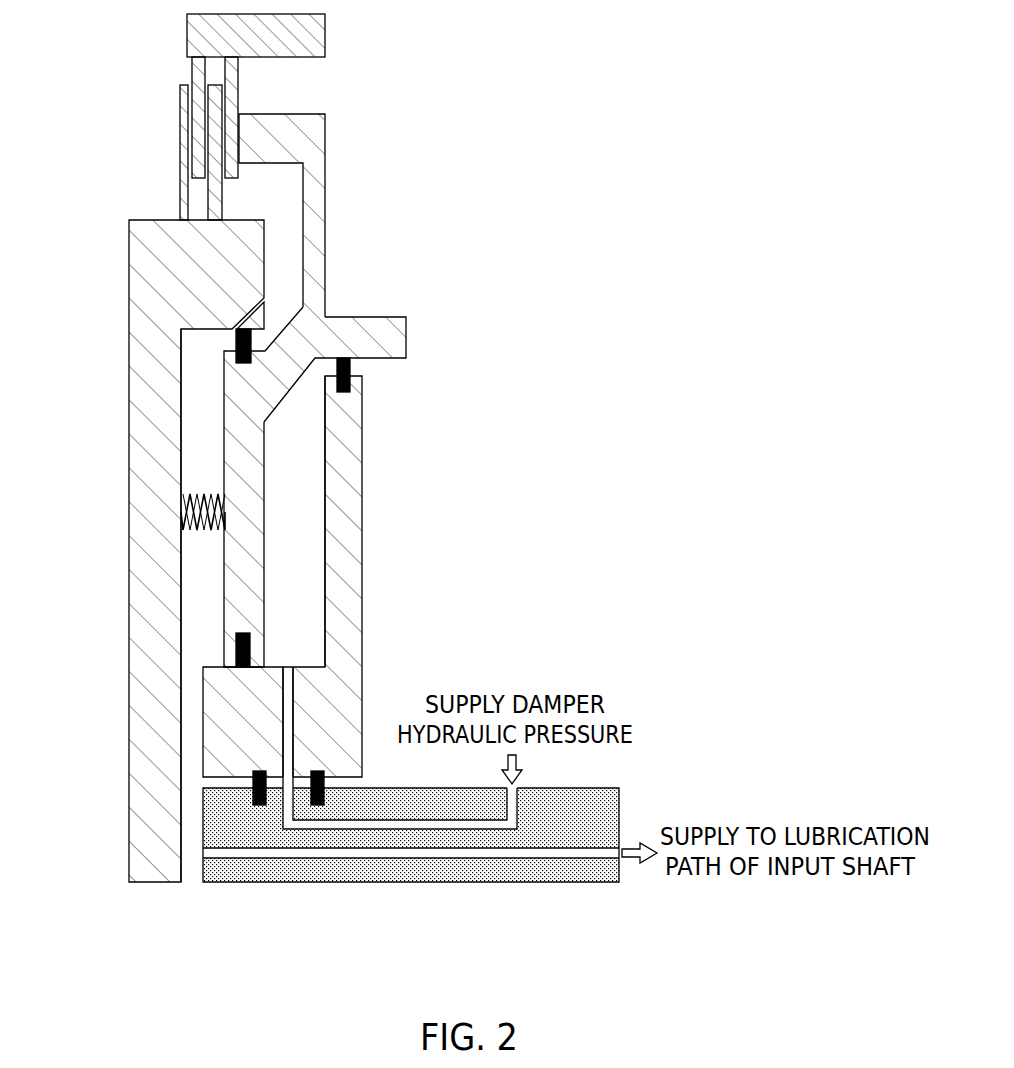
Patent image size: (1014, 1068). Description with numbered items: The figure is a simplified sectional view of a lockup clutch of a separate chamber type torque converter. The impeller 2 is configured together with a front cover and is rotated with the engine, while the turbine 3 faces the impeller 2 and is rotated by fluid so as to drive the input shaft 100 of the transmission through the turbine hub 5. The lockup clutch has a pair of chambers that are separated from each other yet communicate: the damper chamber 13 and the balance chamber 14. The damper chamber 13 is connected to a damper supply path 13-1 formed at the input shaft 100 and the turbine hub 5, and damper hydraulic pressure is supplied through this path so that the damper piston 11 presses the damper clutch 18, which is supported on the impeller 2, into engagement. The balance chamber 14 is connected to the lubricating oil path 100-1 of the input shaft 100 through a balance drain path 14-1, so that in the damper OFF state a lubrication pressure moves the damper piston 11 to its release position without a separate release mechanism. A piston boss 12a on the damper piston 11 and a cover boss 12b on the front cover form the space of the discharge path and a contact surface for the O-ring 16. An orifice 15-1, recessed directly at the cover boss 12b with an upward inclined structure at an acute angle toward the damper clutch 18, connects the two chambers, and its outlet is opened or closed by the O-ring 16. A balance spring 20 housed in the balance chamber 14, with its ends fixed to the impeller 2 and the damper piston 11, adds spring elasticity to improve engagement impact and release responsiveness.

The impeller 2 is at (160, 385).
The turbine 3 is at (318, 33).
The turbine hub 5 is at (343, 617).
The damper piston 11 is at (255, 540).
The piston boss 12a is at (245, 373).
The cover boss 12b is at (253, 249).
The damper chamber 13 is at (305, 480).
The damper supply path 13-1 is at (290, 795).
The balance chamber 14 is at (203, 609).
The balance drain path 14-1 is at (192, 822).
The orifice 15-1 is at (255, 314).
The O-ring 16 is at (252, 342).
The damper clutch 18 is at (183, 105).
The balance spring 20 is at (185, 508).
The input shaft 100 is at (542, 872).
The lubricating oil path 100-1 is at (435, 852).